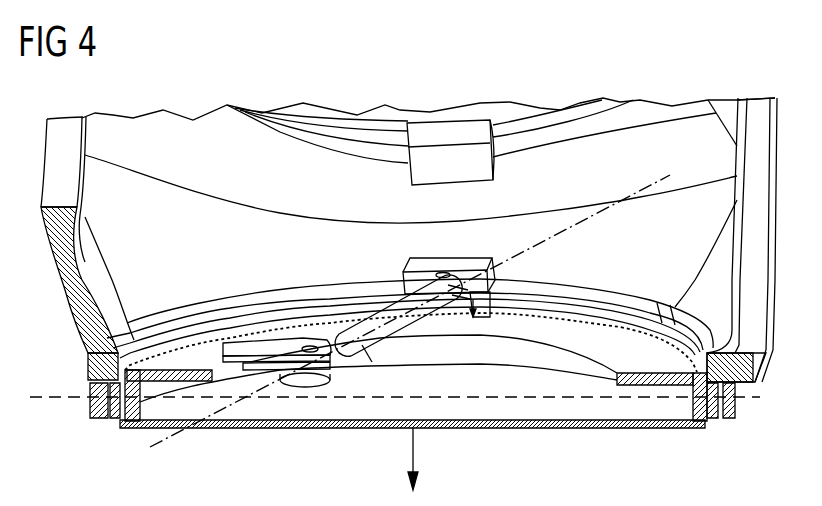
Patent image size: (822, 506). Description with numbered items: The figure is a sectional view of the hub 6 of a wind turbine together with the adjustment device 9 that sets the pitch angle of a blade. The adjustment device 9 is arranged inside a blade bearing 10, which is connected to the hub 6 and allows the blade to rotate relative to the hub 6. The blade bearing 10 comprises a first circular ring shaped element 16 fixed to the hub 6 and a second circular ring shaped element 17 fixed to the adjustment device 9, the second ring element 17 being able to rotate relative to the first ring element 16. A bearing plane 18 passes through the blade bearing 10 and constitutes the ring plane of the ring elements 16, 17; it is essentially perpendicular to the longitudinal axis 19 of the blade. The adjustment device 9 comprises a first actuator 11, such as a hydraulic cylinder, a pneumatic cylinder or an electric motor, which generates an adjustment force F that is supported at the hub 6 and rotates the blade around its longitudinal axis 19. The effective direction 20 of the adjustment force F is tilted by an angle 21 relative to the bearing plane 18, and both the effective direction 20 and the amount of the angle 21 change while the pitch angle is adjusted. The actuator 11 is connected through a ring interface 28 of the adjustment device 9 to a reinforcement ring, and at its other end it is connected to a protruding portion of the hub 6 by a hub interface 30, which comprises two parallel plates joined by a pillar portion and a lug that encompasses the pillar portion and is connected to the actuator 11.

The hub 6 is at (104, 187).
The adjustment device 9 is at (568, 428).
The blade bearing 10 is at (99, 418).
The first actuator 11 is at (384, 318).
The first circular ring shaped element 16 is at (738, 403).
The second circular ring shaped element 17 is at (718, 419).
The bearing plane 18 is at (63, 396).
The longitudinal axis 19 is at (414, 450).
The effective direction 20 is at (577, 224).
The angle 21 is at (462, 292).
The ring interface 28 is at (277, 327).
The hub interface 30 is at (418, 272).
The adjustment force F is at (365, 348).